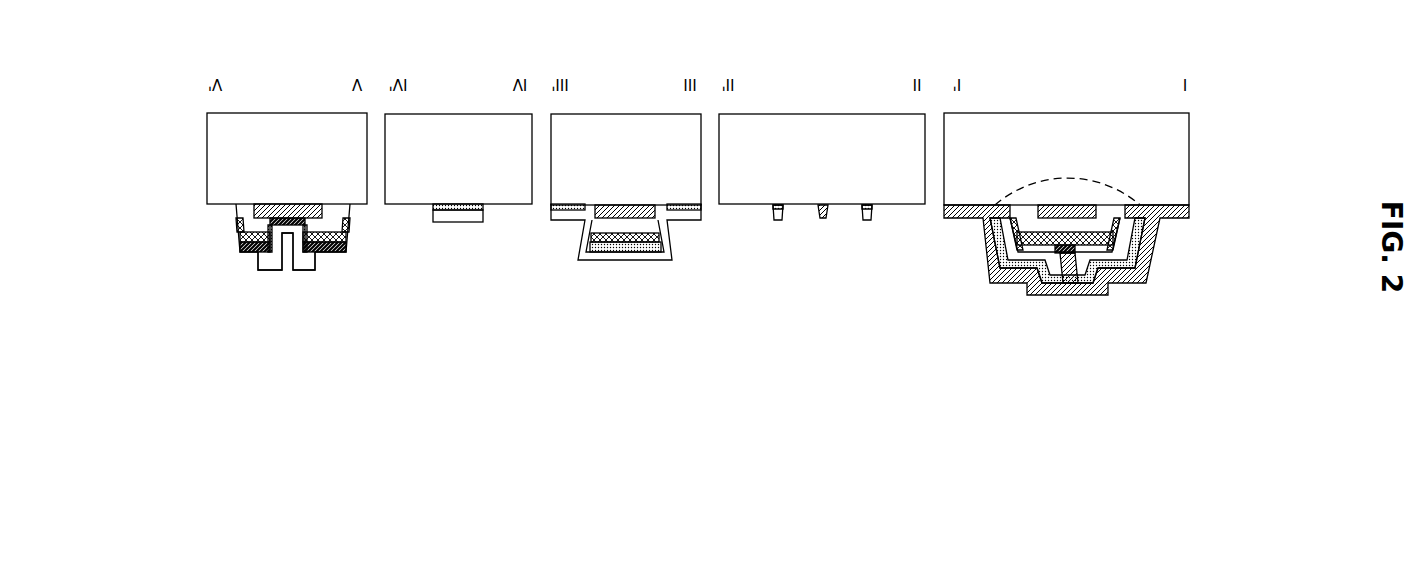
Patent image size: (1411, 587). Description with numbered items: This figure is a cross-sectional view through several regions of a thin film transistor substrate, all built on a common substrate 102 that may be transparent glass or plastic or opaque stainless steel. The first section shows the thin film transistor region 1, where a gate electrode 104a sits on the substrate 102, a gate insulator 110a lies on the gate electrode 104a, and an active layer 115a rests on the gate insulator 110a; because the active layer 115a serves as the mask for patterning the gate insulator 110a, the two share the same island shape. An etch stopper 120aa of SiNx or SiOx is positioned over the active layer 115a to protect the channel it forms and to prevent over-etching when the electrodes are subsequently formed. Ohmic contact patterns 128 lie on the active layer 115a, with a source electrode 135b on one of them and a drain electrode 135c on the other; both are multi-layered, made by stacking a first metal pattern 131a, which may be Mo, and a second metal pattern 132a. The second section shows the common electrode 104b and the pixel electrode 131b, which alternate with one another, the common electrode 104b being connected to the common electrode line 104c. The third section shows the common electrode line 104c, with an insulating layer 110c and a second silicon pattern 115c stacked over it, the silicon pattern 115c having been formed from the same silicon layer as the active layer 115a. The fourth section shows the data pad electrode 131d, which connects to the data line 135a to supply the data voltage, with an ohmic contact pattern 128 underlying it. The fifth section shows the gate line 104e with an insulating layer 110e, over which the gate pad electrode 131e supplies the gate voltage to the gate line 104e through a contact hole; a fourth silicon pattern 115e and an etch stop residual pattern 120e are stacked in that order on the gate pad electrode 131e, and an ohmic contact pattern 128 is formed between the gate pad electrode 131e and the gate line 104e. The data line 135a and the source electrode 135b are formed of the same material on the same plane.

The semiconductor package region 1 is at (1021, 190).
The substrate 102 is at (222, 147).
The gate electrode 104a is at (1063, 205).
The common electrode 104b is at (823, 205).
The common electrode line 104c is at (627, 207).
The gate line 104e is at (287, 205).
The gate insulator 110a is at (1000, 250).
The insulating layer 110c is at (588, 247).
The insulating layer 110e is at (240, 209).
The active layer 115a is at (1103, 217).
The second silicon pattern 115c is at (622, 247).
The fourth silicon pattern 115e is at (243, 238).
The etch stopper 120aa is at (1066, 284).
The etch stop residual pattern 120e is at (328, 254).
The ohmic contact pattern 128 is at (982, 223).
The first metal pattern 131a is at (1003, 283).
The pixel electrode 131b is at (780, 222).
The data pad electrode 131d is at (462, 215).
The gate pad electrode 131e is at (276, 266).
The second metal pattern 132a is at (1012, 282).
The data line 135a is at (1207, 350).
The source electrode 135b is at (1130, 393).
The drain electrode 135c is at (990, 368).